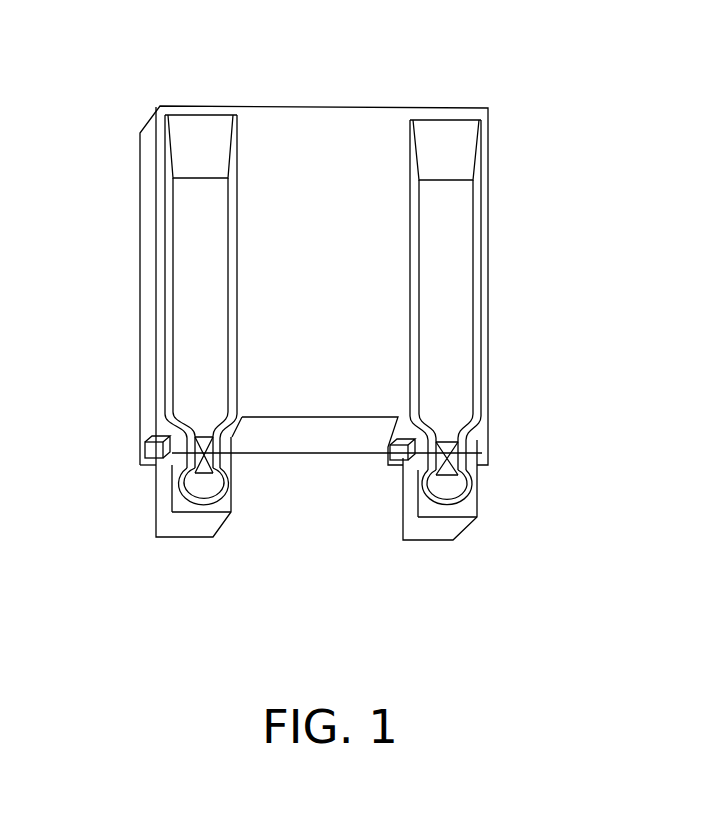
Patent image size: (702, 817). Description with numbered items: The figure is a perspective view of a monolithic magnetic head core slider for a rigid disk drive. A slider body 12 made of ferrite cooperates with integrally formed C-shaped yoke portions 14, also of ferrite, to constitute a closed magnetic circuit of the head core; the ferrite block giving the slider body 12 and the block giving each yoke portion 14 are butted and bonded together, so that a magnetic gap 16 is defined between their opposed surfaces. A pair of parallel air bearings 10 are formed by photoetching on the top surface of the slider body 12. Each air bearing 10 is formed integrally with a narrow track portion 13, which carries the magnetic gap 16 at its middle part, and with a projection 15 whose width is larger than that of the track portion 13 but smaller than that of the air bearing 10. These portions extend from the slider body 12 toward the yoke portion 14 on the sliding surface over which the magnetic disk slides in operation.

The air bearing 10 is at (190, 297).
The slider body 12 is at (343, 77).
The track portion 13 is at (200, 457).
The yoke portion 14 is at (150, 550).
The projection 15 is at (202, 490).
The magnetic gap 16 is at (203, 440).